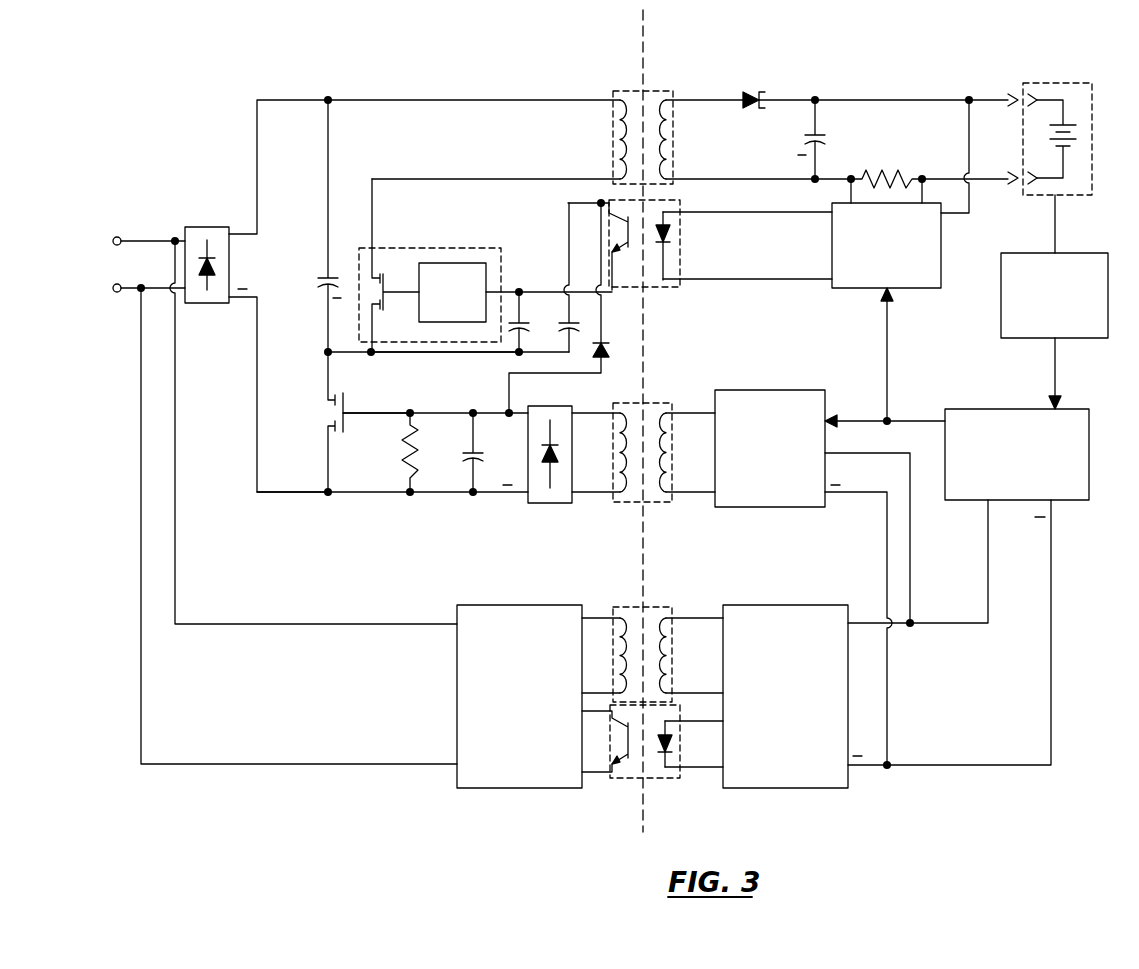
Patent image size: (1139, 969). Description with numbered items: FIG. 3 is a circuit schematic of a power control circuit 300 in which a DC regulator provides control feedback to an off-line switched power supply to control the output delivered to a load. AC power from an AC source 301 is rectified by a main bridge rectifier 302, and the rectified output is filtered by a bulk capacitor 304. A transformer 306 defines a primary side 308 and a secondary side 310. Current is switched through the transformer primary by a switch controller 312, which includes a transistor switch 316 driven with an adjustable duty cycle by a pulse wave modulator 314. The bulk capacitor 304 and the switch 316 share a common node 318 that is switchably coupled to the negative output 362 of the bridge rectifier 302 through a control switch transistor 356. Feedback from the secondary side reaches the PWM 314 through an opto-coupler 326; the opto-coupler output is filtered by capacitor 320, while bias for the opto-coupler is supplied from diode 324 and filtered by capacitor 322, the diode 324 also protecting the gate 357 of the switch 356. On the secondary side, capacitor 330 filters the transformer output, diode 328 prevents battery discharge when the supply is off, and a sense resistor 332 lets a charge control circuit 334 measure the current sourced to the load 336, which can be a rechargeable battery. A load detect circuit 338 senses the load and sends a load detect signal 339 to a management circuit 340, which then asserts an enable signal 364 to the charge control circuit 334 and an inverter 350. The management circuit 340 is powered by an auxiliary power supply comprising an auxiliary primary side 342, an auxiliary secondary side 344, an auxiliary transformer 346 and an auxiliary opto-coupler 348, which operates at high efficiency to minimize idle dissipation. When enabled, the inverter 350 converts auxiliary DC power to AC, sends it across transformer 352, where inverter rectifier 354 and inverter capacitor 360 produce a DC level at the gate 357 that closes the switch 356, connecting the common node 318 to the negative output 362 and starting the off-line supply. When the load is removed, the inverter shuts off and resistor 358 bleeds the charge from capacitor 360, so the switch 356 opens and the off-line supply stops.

The power control circuit 300 is at (328, 841).
The AC source 301 is at (140, 240).
The main bridge rectifier 302 is at (195, 304).
The bulk capacitor 304 is at (322, 277).
The transformer 306 is at (612, 153).
The primary side 308 is at (621, 50).
The secondary side 310 is at (695, 50).
The switch controller 312 is at (465, 248).
The pulse wave modulator 314 is at (439, 312).
The transistor switch 316 is at (388, 280).
The common node 318 is at (430, 353).
The capacitor 320 is at (516, 332).
The capacitor 322 is at (558, 318).
The diode 324 is at (610, 356).
The opto-coupler 326 is at (681, 259).
The diode 328 is at (745, 98).
The capacitor 330 is at (822, 137).
The sense resistor 332 is at (886, 172).
The charge control circuit 334 is at (874, 275).
The load 336 is at (1058, 83).
The load detect circuit 338 is at (1042, 325).
The load detect signal 339 is at (1052, 380).
The management circuit 340 is at (1005, 484).
The auxiliary primary side 342 is at (507, 725).
The auxiliary secondary side 344 is at (773, 725).
The auxiliary transformer 346 is at (632, 606).
The auxiliary opto-coupler 348 is at (632, 779).
The inverter 350 is at (758, 468).
The transformer 352 is at (652, 503).
The inverter rectifier 354 is at (550, 504).
The control switch transistor 356 is at (330, 398).
The gate 357 is at (360, 415).
The resistor 358 is at (407, 457).
The inverter capacitor 360 is at (467, 465).
The negative output 362 is at (293, 493).
The enable signal 364 is at (913, 420).